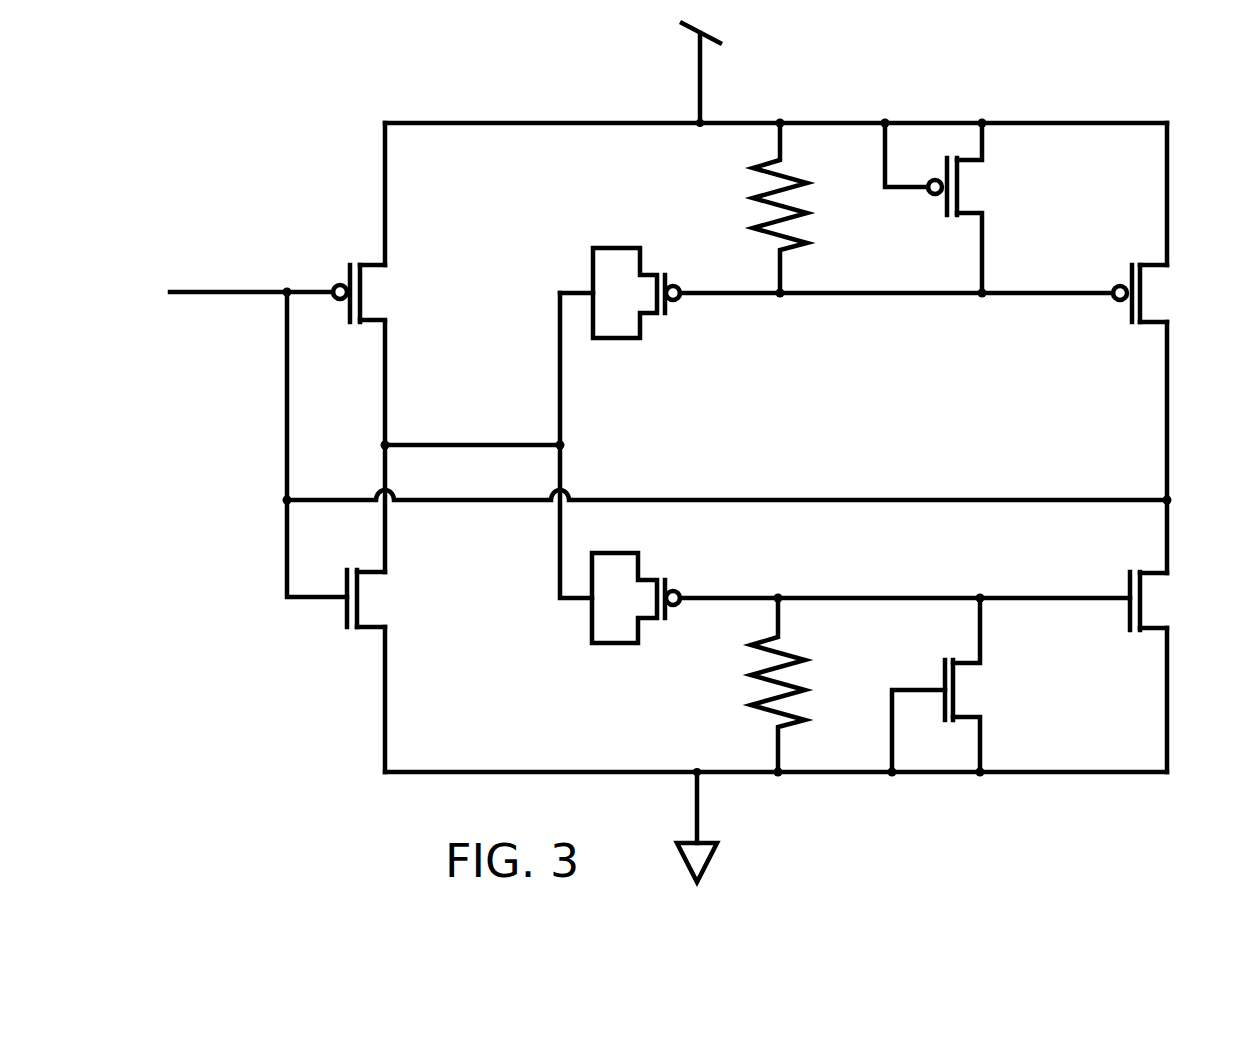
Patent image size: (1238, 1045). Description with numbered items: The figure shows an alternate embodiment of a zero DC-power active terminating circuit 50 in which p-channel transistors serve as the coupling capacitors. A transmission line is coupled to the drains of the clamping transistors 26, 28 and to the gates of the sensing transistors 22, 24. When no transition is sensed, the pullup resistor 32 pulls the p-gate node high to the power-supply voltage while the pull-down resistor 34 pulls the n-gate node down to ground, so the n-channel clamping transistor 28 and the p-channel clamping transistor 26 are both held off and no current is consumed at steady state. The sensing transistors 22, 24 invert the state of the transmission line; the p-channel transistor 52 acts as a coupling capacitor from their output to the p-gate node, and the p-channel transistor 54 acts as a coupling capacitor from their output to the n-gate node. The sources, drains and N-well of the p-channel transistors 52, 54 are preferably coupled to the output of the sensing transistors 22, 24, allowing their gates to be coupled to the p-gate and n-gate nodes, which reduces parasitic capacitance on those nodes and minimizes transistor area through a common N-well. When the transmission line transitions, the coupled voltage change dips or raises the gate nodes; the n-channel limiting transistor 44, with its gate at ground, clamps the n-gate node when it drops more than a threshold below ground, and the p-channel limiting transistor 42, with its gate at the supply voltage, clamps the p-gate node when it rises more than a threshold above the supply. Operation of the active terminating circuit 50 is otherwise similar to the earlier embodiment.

The p-channel sensing transistor 22 is at (375, 295).
The n-channel sensing transistor 24 is at (372, 600).
The p-channel clamping transistor 26 is at (1156, 295).
The n-channel clamping transistor 28 is at (1156, 600).
The pullup resistor 32 is at (764, 183).
The pull-down resistor 34 is at (762, 660).
The p-channel limiting transistor 42 is at (972, 190).
The n-channel limiting transistor 44 is at (970, 695).
The active terminating circuit 50 is at (745, 452).
The p-channel transistor 52 is at (633, 308).
The p-channel transistor 54 is at (631, 613).